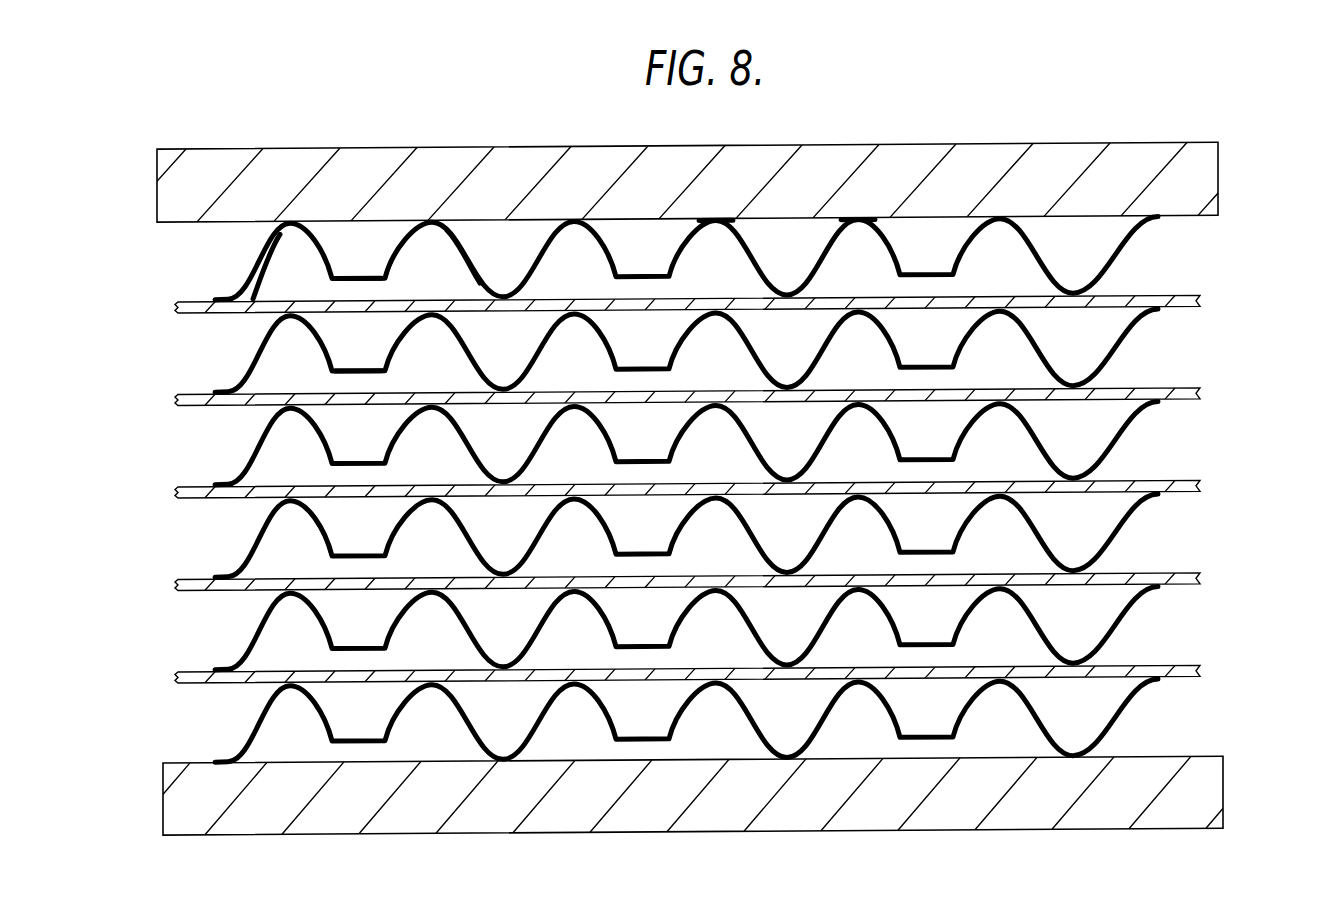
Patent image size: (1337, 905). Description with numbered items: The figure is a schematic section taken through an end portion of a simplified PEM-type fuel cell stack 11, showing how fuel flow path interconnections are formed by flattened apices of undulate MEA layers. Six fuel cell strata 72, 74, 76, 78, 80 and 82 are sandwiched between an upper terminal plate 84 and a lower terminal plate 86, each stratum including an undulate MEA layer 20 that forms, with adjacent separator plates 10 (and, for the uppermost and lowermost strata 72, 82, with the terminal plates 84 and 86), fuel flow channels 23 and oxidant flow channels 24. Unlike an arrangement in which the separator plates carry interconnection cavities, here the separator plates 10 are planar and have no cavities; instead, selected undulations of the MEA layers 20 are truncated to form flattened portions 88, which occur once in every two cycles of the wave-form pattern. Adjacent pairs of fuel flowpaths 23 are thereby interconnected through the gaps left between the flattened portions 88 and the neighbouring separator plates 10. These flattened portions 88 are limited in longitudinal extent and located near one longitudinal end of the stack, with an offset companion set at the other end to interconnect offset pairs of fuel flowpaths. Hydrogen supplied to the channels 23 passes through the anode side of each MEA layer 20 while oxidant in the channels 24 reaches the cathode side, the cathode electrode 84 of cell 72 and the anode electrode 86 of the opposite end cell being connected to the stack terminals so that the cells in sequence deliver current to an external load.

The fuel cell stack 11 is at (1122, 131).
The separator plate 10 is at (190, 400).
The undulate MEA layer 20 is at (240, 285).
The fuel flow channel 23 is at (262, 268).
The oxidant flow channel 24 is at (670, 232).
The fuel cell stratum 72 is at (1200, 248).
The fuel cell stratum 74 is at (1200, 339).
The fuel cell stratum 76 is at (1205, 429).
The fuel cell stratum 78 is at (1210, 522).
The fuel cell stratum 80 is at (1208, 614).
The fuel cell stratum 82 is at (1210, 703).
The terminal plate 84 is at (992, 162).
The terminal plate 86 is at (1192, 790).
The flattened portion 88 is at (352, 283).